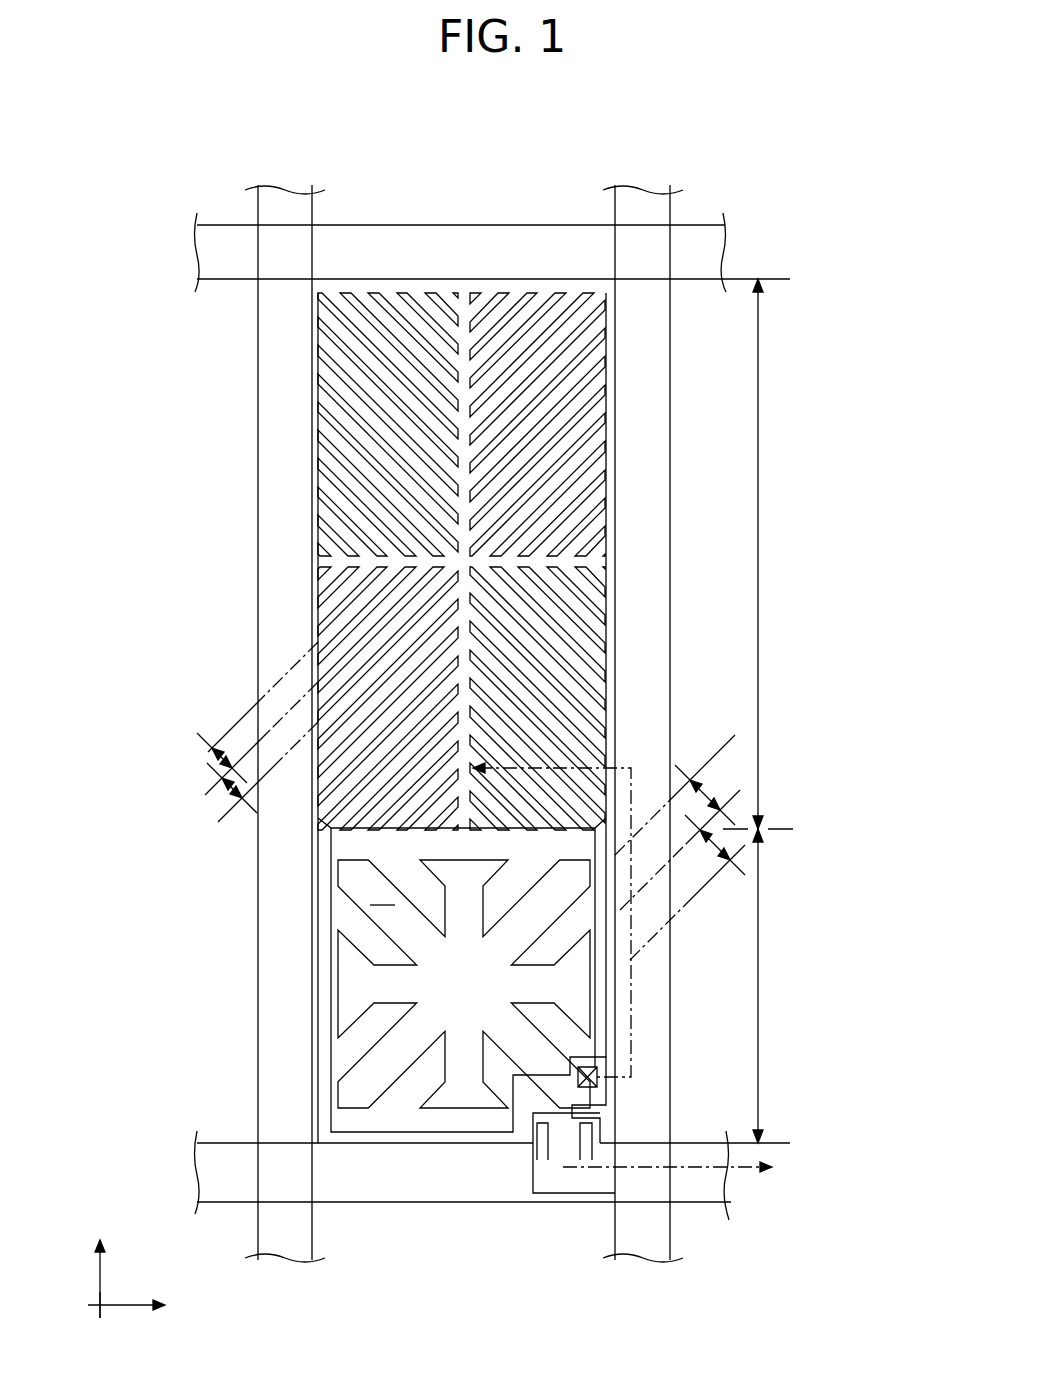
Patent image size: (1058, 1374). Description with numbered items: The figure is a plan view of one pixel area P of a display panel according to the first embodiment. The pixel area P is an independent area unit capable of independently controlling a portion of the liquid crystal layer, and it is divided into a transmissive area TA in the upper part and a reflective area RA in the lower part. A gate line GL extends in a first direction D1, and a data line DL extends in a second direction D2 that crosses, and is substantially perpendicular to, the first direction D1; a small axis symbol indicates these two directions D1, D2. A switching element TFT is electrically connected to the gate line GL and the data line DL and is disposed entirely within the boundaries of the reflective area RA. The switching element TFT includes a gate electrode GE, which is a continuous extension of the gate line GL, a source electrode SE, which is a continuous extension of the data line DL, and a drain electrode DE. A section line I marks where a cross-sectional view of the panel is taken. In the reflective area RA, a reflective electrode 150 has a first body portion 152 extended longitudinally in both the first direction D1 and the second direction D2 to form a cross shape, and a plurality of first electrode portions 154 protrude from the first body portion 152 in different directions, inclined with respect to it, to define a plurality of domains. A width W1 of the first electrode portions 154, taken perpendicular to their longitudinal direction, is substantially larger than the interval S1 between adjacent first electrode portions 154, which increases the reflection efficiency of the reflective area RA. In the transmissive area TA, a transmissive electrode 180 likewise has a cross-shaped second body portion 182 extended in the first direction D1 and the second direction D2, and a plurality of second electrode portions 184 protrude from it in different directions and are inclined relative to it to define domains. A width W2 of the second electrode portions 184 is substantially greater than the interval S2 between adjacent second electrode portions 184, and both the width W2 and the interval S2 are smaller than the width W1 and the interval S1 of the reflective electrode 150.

The pixel area P is at (430, 207).
The data line DL is at (268, 1033).
The gate line GL is at (700, 1191).
The transmissive electrode 180 is at (365, 718).
The second body portion 182 is at (338, 562).
The second electrode portions 184 is at (338, 490).
The reflective electrode 150 is at (365, 985).
The first body portion 152 is at (351, 985).
The first electrode portions 154 is at (388, 915).
The switching element TFT is at (540, 1179).
The gate electrode GE is at (560, 1152).
The source electrode SE is at (540, 1152).
The drain electrode DE is at (586, 1152).
The line I-I' I is at (676, 1167).
The transmissive area TA is at (775, 554).
The reflective area RA is at (791, 986).
The interval between adjacent first electrode portions S1 is at (700, 787).
The width of the first electrode portions W1 is at (714, 845).
The interval between adjacent second electrode portions S2 is at (232, 745).
The width of the second electrode portions W2 is at (225, 790).
The first direction D1 is at (152, 1304).
The second direction D2 is at (103, 1263).